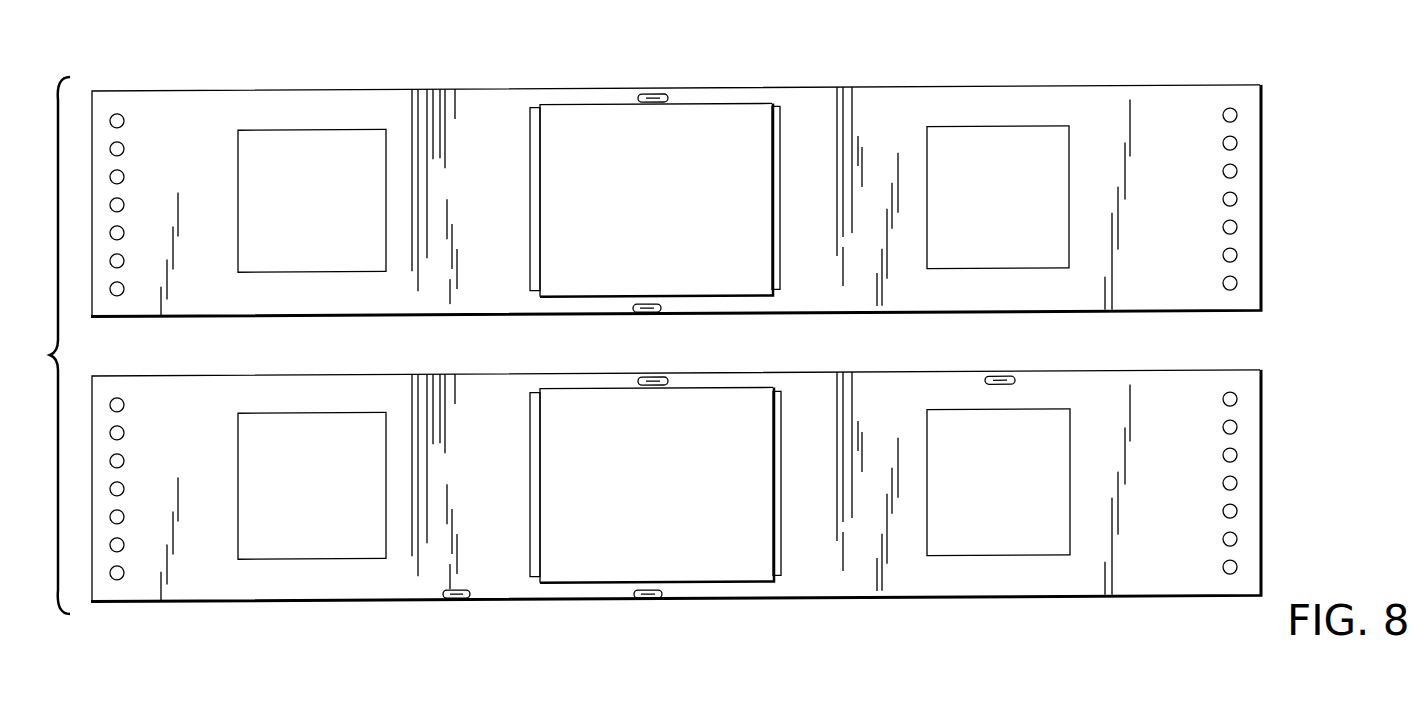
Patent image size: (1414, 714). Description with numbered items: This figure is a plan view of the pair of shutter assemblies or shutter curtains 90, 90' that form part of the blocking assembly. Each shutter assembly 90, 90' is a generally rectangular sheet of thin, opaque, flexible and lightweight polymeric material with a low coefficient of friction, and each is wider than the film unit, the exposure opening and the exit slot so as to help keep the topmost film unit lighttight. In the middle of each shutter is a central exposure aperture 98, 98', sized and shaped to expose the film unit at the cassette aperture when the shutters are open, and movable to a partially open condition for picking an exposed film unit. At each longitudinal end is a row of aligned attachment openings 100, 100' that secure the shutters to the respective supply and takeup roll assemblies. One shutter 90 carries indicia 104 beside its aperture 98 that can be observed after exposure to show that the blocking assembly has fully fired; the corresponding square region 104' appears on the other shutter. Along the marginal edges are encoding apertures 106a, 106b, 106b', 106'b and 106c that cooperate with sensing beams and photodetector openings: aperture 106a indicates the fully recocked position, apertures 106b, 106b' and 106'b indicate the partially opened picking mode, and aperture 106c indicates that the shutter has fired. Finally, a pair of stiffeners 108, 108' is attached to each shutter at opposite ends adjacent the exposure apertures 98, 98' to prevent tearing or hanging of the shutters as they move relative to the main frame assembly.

The shutter assembly 90 is at (695, 459).
The shutter assembly 90' is at (676, 161).
The central exposure aperture 98 is at (667, 453).
The central exposure aperture 98' is at (670, 169).
The attachment openings 100 is at (673, 450).
The attachment openings 100' is at (673, 166).
The indicia 104 is at (655, 489).
The memory chip of second board 104' is at (653, 199).
The encoding aperture 106a is at (443, 601).
The encoding aperture 106b is at (667, 489).
The encoding aperture 106b' is at (606, 332).
The mounting slot of second board 106'b is at (675, 71).
The encoding aperture 106c is at (1000, 380).
The stiffener 108 is at (659, 483).
The socket retainer of second board 108' is at (662, 198).